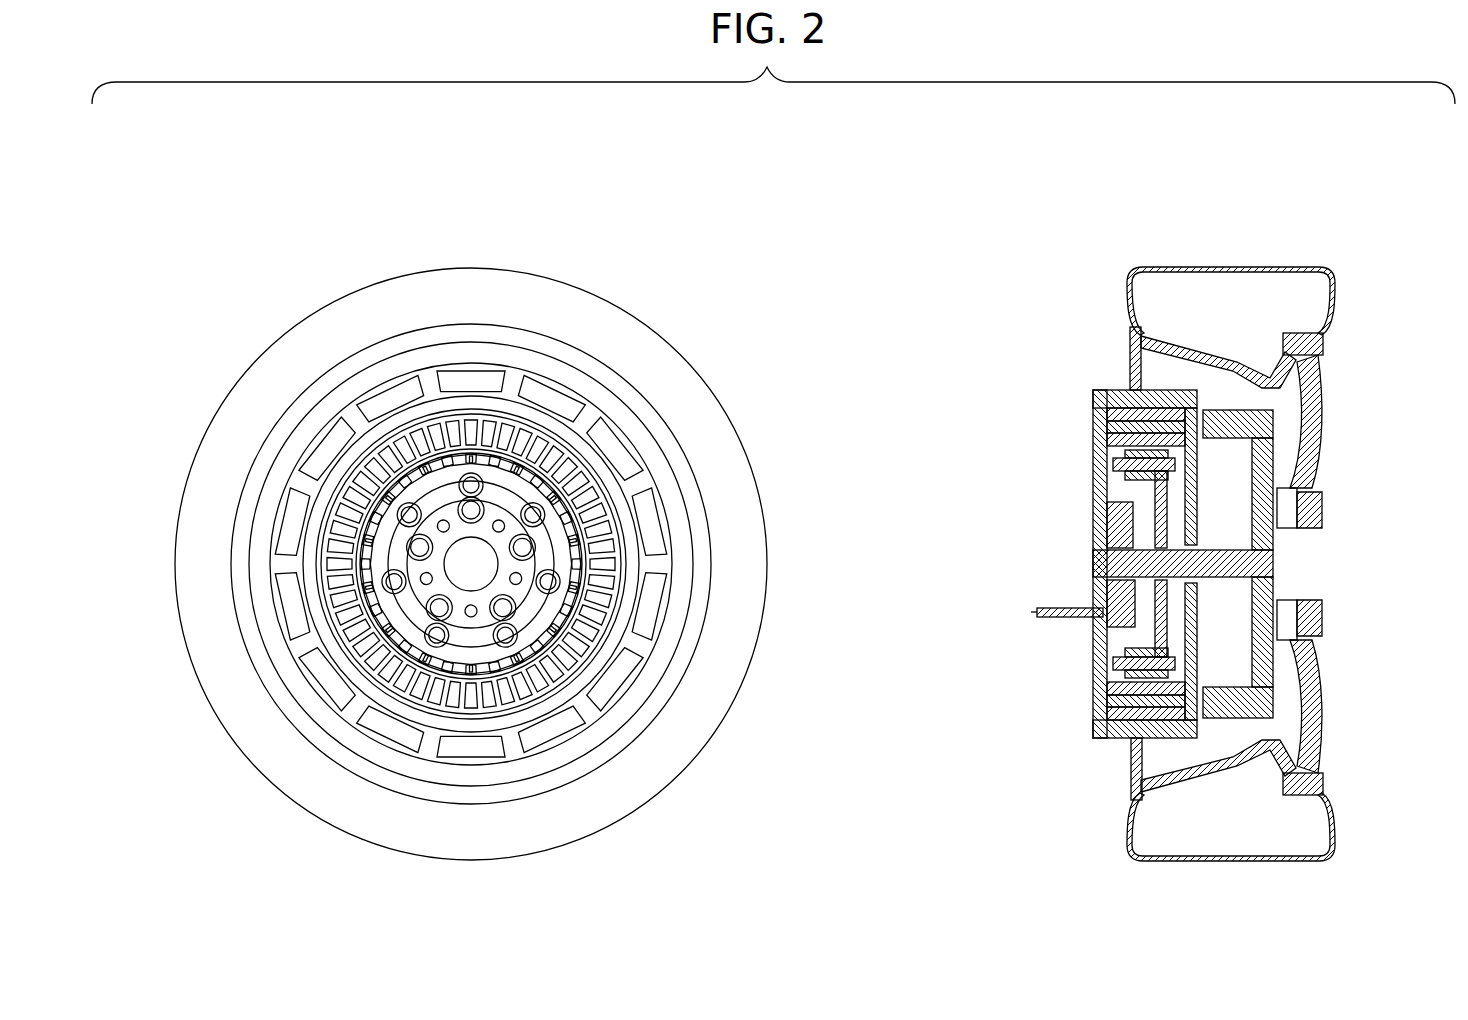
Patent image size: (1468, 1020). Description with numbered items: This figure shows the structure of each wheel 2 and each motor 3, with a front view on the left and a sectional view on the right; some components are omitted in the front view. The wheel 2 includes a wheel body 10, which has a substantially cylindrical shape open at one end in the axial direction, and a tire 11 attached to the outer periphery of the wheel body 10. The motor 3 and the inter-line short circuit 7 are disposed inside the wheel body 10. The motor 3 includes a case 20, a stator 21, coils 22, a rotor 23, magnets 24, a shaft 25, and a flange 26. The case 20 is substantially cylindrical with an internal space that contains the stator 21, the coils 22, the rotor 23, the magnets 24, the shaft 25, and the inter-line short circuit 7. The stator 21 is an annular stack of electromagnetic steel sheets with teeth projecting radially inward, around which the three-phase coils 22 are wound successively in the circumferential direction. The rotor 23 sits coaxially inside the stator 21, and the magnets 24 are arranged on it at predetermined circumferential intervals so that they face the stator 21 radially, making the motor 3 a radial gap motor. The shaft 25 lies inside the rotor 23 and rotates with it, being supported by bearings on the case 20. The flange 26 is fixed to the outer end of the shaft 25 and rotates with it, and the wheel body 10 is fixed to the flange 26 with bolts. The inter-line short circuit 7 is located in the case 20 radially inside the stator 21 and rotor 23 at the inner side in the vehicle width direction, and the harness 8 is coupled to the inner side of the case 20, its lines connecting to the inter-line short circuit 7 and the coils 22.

The wheel 2 is at (415, 200).
The motor 3 is at (552, 717).
The inter-line short circuit 7 is at (1110, 494).
The harness 8 is at (1040, 608).
The wheel body 10 is at (548, 330).
The tire 11 is at (552, 290).
The case 20 is at (1105, 392).
The stator 21 is at (405, 470).
The coils 22 is at (602, 516).
The rotor 23 is at (446, 490).
The magnets 24 is at (400, 490).
The shaft 25 is at (481, 548).
The flange 26 is at (1275, 697).